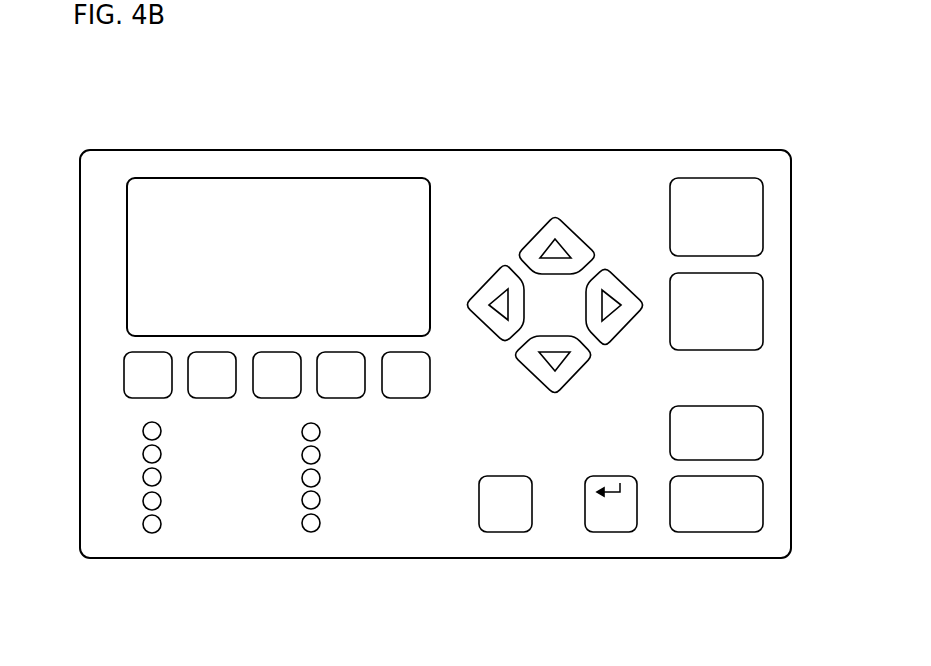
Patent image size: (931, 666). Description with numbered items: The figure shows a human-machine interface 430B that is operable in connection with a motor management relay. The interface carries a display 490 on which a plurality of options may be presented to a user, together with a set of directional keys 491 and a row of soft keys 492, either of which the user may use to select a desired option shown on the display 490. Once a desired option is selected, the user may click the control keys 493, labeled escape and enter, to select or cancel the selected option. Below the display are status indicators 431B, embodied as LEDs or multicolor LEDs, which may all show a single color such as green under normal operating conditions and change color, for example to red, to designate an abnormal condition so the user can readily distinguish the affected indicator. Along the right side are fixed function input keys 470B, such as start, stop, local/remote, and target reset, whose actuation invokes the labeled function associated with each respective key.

The human-machine interface 430B is at (124, 118).
The display 490 is at (276, 178).
The directional keys 491 is at (499, 245).
The soft keys 492 is at (463, 386).
The status indicators 431B is at (117, 450).
The fixed function input keys 470B is at (762, 249).
The control keys 493 is at (612, 532).